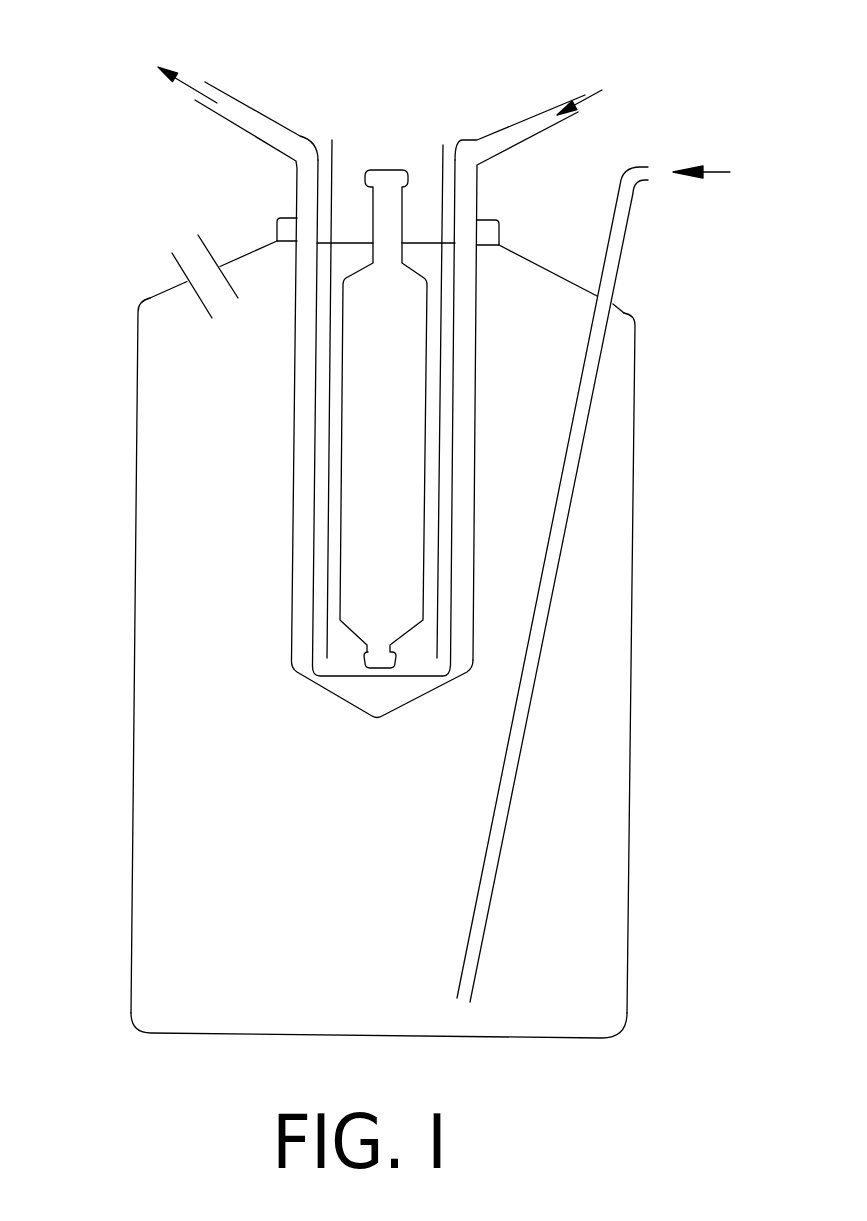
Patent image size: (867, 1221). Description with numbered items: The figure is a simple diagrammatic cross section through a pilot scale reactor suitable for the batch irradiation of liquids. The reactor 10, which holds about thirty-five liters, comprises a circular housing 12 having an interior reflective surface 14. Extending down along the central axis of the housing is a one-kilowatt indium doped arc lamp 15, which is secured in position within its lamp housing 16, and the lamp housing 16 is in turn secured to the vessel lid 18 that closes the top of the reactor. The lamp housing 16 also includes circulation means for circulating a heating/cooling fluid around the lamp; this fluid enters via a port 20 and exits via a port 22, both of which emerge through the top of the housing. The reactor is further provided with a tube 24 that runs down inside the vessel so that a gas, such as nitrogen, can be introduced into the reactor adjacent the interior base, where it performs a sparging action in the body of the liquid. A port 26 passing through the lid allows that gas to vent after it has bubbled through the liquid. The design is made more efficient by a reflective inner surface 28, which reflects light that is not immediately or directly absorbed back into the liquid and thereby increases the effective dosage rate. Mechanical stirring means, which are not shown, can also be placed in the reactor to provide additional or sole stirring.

The reactor 10 is at (627, 847).
The circular housing 12 is at (627, 1002).
The interior reflective surface 14 is at (132, 943).
The indium doped arc lamp 15 is at (407, 612).
The lamp housing 16 is at (312, 640).
The vessel lid 18 is at (497, 233).
The port 20 is at (570, 93).
The port 22 is at (225, 90).
The tube 24 is at (636, 190).
The port 26 is at (173, 260).
The reflective inner surface 28 is at (335, 150).